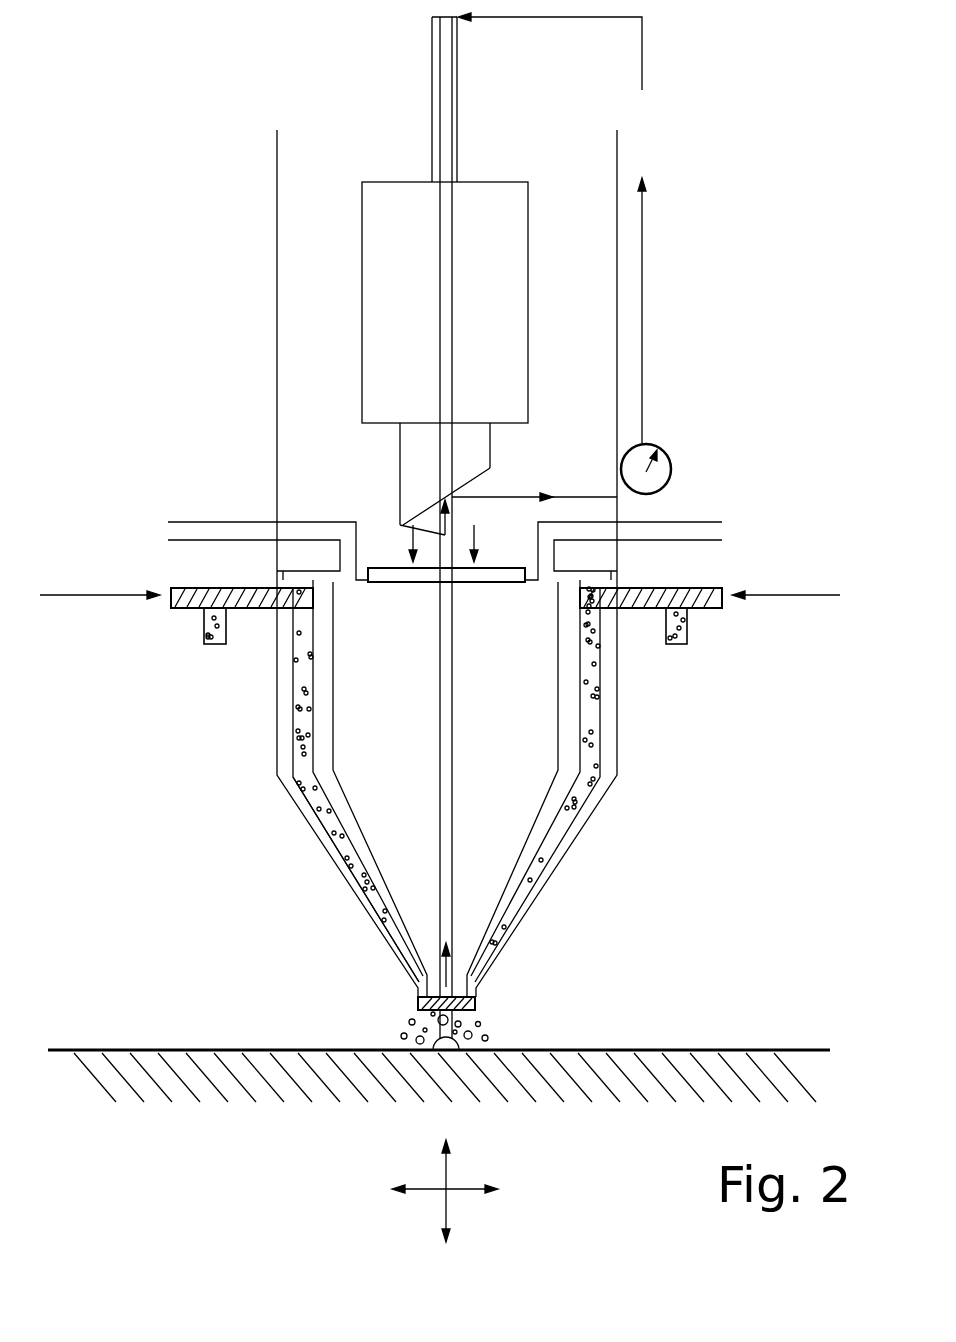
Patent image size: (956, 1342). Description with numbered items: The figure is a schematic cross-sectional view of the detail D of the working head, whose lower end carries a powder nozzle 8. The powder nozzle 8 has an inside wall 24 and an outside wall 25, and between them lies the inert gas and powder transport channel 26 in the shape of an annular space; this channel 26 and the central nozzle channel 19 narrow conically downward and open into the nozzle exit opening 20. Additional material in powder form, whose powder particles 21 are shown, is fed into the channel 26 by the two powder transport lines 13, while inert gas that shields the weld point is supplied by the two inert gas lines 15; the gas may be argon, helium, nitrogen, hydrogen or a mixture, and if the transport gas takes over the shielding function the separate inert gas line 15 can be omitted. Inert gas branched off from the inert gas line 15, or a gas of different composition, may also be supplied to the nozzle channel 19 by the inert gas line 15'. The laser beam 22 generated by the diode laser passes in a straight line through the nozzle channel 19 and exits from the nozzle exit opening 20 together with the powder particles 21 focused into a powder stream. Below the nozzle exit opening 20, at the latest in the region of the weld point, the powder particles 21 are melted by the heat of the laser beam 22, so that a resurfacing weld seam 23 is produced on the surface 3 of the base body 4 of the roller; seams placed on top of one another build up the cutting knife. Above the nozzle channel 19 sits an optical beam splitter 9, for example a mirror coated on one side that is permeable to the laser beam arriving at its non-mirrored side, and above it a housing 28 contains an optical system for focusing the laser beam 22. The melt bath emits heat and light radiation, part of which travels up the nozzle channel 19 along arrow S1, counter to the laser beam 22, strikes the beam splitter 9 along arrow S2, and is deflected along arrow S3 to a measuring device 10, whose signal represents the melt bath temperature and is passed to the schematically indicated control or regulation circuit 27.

The surface 3 is at (140, 1050).
The base body 4 is at (163, 1160).
The powder nozzle 8 is at (707, 820).
The optical beam splitter 9 is at (490, 462).
The measuring device 10 is at (648, 440).
The powder transport lines 13 is at (201, 636).
The inert gas lines 15 is at (440, 563).
The inert gas line 15' is at (451, 513).
The nozzle channel 19 is at (492, 792).
The nozzle exit opening 20 is at (486, 1014).
The powder particles 21 is at (593, 777).
The laser beam 22 is at (453, 838).
The resurfacing weld seam 23 is at (458, 1060).
The inside wall 24 is at (365, 863).
The outside wall 25 is at (282, 753).
The inert gas and powder transport channel 26 is at (310, 802).
The control or regulation circuit 27 is at (643, 212).
The housing 28 is at (403, 193).
The arrow S1 is at (415, 990).
The arrow S2 is at (445, 535).
The arrow S3 is at (520, 498).
The detail D is at (170, 305).